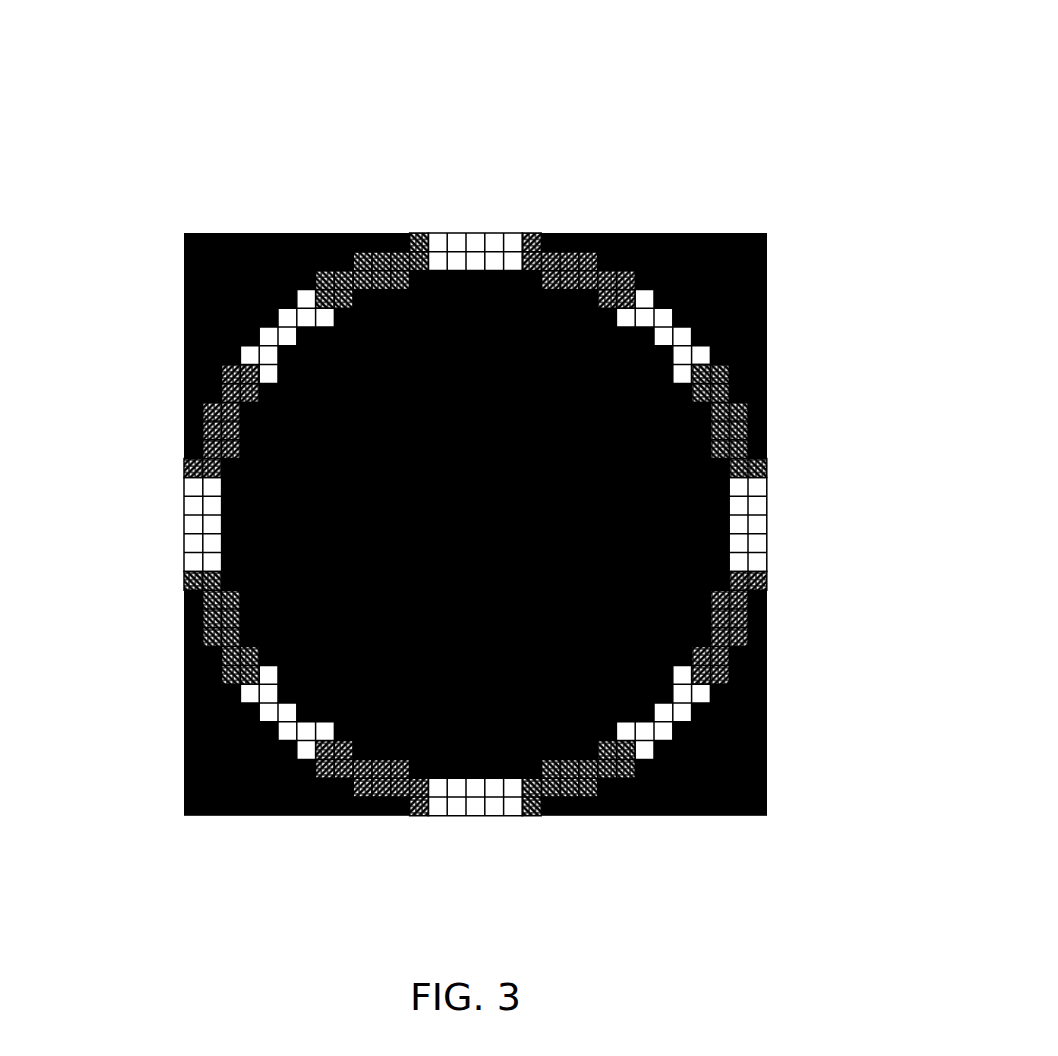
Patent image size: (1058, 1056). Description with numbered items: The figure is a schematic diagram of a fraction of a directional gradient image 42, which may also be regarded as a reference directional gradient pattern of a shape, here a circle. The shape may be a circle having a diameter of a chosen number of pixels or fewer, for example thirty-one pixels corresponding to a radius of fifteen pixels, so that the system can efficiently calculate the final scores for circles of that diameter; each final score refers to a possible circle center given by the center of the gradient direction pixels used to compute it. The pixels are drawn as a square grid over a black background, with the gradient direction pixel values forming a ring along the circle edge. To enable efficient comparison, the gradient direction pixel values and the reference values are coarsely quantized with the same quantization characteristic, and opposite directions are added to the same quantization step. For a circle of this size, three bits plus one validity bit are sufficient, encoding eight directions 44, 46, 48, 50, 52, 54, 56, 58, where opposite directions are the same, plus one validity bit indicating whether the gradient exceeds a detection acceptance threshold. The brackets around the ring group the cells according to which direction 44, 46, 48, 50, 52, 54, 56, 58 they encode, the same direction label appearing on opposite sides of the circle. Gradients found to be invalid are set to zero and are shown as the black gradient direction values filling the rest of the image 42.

The directional gradient image 42 is at (578, 70).
The direction 44 is at (164, 477).
The direction 46 is at (164, 364).
The direction 48 is at (164, 289).
The direction 50 is at (316, 225).
The direction 52 is at (428, 225).
The direction 54 is at (635, 225).
The direction 56 is at (783, 289).
The direction 58 is at (783, 364).